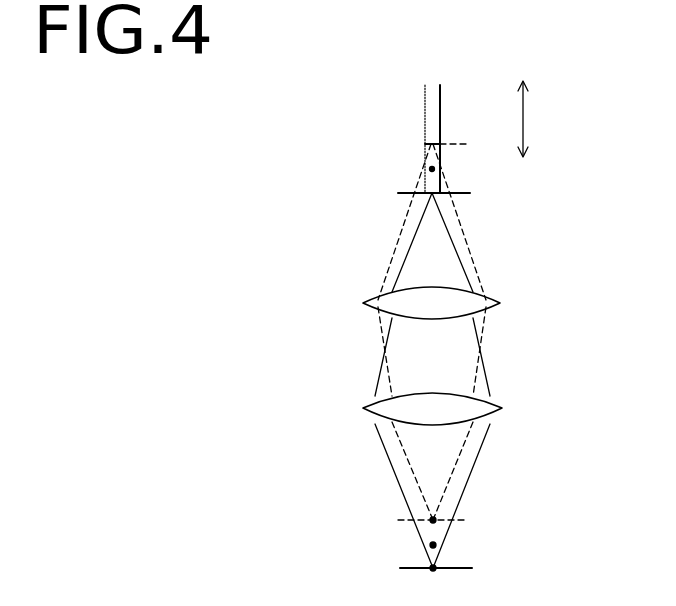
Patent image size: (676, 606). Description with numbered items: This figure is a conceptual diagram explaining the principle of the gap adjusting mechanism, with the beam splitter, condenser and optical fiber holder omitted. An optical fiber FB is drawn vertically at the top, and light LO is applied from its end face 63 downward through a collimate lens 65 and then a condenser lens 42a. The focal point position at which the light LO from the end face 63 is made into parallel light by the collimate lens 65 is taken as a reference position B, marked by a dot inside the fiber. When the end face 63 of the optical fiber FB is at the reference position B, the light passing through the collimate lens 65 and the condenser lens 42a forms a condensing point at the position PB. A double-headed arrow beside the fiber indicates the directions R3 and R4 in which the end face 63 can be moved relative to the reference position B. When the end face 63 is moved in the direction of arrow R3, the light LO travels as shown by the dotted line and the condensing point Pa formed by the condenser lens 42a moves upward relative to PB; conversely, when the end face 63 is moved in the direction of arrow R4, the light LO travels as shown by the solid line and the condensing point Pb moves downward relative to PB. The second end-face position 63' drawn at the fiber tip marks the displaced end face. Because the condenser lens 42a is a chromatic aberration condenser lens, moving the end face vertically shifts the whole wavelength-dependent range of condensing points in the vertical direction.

The optical fiber FB is at (437, 110).
The end face 63 is at (409, 145).
The fiber end face image / emission end 63' is at (407, 182).
The reference position B is at (435, 169).
The light LO is at (445, 250).
The collimate lens 65 is at (495, 300).
The condenser lens 42a is at (495, 408).
The condensing point Pa is at (437, 518).
The condensing point PB is at (430, 545).
The condensing point Pb is at (437, 567).
The arrow R3 is at (527, 106).
The arrow R4 is at (526, 167).